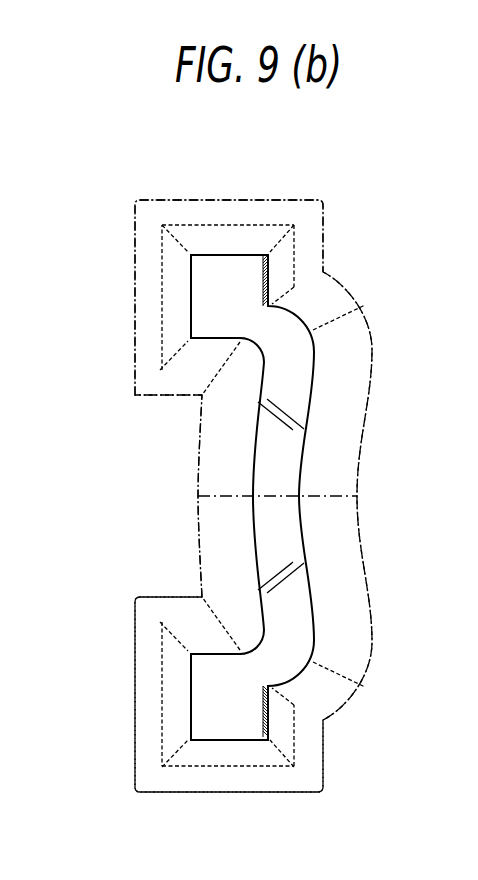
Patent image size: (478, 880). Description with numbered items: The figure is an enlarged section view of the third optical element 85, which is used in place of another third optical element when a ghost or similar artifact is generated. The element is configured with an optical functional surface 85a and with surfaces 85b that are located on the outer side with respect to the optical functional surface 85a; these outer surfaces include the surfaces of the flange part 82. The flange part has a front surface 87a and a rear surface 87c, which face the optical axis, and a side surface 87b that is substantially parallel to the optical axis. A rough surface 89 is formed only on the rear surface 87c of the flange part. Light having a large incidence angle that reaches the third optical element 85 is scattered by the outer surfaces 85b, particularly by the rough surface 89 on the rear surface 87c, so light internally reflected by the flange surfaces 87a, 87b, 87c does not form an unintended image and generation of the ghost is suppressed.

The third optical element 85 is at (112, 229).
The optical functional surface 85a is at (198, 523).
The surfaces located on the outer side with respect to the optical functional surfac 85b is at (233, 199).
The flange part 82 is at (206, 267).
The front surface of the flange part 87a is at (162, 295).
The side surface of the flange part 87b is at (273, 226).
The rear surface of the flange part 87c is at (300, 243).
The rough surface 89 is at (268, 278).